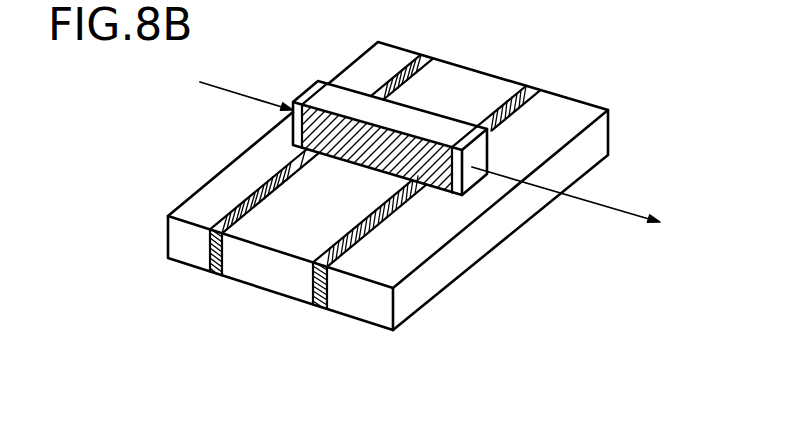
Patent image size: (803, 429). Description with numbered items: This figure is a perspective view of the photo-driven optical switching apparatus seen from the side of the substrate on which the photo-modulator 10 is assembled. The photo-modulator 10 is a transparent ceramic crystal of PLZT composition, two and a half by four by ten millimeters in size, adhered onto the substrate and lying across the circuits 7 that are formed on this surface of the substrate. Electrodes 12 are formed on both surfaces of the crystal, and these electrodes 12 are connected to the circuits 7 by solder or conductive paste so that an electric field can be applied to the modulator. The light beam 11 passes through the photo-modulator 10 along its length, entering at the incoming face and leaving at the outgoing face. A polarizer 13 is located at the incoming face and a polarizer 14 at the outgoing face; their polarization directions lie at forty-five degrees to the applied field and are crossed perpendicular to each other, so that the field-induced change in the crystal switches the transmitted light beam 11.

The circuits 7 is at (218, 270).
The photo-modulator 10 is at (453, 127).
The light beam 11 is at (437, 157).
The electrodes 12 is at (375, 158).
The polarizer 13 is at (309, 97).
The polarizer 14 is at (457, 192).